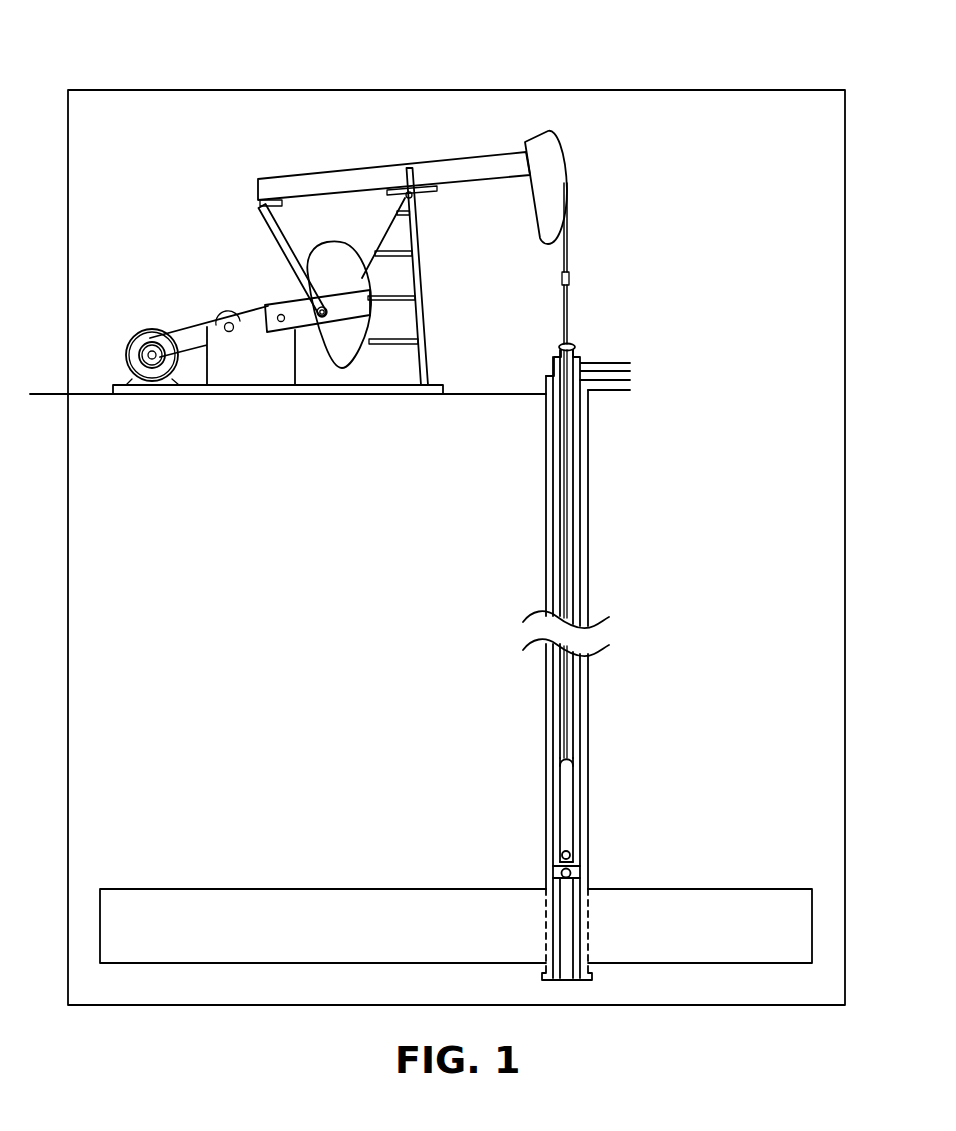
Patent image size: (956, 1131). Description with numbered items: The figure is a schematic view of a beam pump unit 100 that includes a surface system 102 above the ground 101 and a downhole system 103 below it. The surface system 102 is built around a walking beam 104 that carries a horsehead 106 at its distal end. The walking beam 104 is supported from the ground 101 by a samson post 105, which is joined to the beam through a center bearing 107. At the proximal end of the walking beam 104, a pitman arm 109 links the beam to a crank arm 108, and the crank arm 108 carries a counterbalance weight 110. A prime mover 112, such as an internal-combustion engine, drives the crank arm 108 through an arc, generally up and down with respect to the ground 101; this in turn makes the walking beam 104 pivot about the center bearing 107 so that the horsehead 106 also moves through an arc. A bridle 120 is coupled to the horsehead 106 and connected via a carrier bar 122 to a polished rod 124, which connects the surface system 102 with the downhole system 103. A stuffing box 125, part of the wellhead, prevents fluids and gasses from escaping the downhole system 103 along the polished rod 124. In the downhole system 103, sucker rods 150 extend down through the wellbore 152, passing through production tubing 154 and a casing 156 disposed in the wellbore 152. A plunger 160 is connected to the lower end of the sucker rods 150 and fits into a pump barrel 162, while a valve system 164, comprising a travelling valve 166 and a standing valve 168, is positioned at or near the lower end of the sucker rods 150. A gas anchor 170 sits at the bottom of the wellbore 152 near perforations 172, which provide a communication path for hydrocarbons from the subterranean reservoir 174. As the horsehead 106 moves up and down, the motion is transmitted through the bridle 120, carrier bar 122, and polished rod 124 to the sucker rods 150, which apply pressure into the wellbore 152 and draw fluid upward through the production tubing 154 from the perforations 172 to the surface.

The beam pump unit 100 is at (137, 40).
The ground 101 is at (55, 393).
The surface system 102 is at (355, 250).
The downhole system 103 is at (456, 671).
The walking beam 104 is at (477, 160).
The samson post 105 is at (424, 333).
The horsehead 106 is at (541, 134).
The center bearing 107 is at (425, 197).
The crank arm 108 is at (312, 318).
The pitman arm 109 is at (288, 222).
The counterbalance weight 110 is at (338, 352).
The prime mover 112 is at (133, 348).
The bridle 120 is at (570, 236).
The carrier bar 122 is at (571, 282).
The polished rod 124 is at (571, 304).
The stuffing box 125 is at (576, 347).
The sucker rods 150 is at (570, 425).
The wellbore 152 is at (606, 452).
The production tubing 154 is at (580, 488).
The casing 156 is at (590, 516).
The plunger 160 is at (569, 766).
The pump barrel 162 is at (575, 822).
The valve system 164 is at (528, 875).
The travelling valve 166 is at (563, 856).
The standing valve 168 is at (572, 875).
The gas anchor 170 is at (576, 923).
The perforations 172 is at (545, 948).
The subterranean reservoir 174 is at (235, 888).